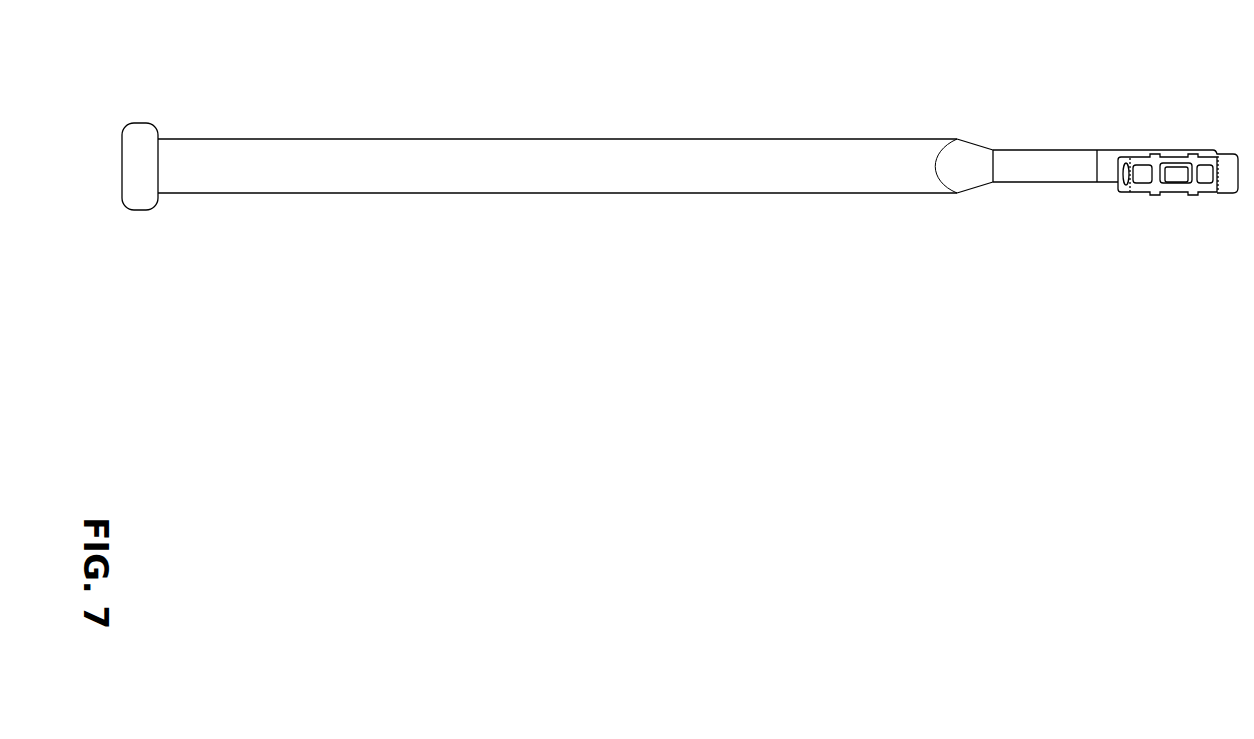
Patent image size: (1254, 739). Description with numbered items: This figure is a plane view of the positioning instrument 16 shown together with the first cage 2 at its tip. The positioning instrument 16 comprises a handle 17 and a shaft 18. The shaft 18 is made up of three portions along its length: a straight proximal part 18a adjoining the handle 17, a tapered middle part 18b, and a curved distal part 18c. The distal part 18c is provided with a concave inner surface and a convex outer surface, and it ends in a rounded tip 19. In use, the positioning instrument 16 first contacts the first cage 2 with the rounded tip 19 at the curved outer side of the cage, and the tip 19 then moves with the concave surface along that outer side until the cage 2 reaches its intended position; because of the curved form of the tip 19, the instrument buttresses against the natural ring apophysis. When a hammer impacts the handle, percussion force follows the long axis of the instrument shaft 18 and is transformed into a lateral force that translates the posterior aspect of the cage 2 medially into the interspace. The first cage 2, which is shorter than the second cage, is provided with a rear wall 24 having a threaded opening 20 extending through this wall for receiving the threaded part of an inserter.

The first cage 2 is at (1212, 194).
The positioning instrument 16 is at (361, 138).
The handle 17 is at (141, 140).
The shaft 18 is at (445, 139).
The straight proximal part 18a is at (554, 165).
The tapered middle part 18b is at (828, 160).
The curved distal part 18c is at (1055, 162).
The rounded tip 19 is at (1203, 157).
The threaded opening 20 is at (1127, 171).
The rear wall 24 is at (1128, 186).